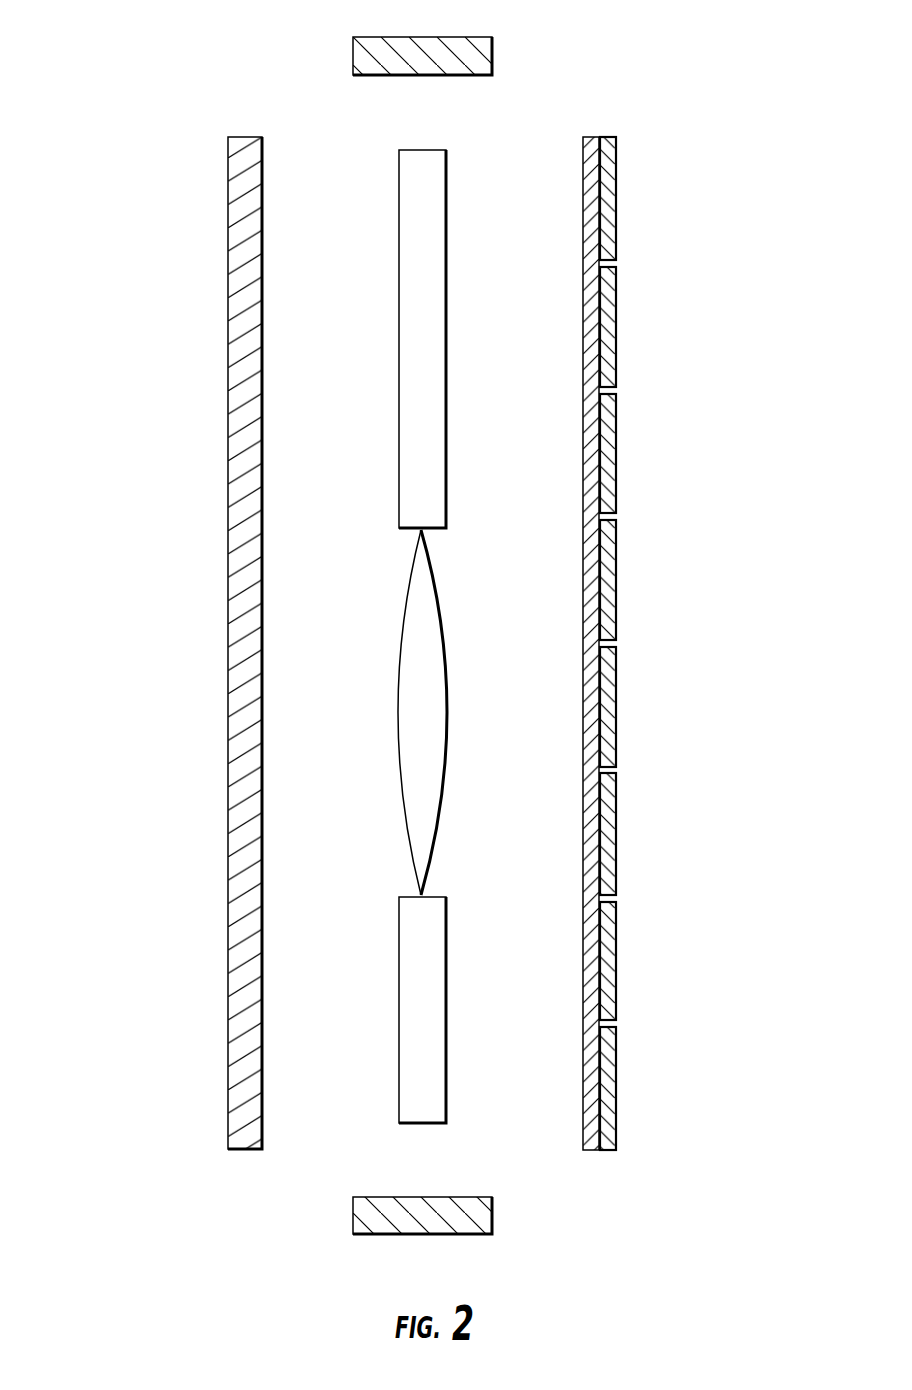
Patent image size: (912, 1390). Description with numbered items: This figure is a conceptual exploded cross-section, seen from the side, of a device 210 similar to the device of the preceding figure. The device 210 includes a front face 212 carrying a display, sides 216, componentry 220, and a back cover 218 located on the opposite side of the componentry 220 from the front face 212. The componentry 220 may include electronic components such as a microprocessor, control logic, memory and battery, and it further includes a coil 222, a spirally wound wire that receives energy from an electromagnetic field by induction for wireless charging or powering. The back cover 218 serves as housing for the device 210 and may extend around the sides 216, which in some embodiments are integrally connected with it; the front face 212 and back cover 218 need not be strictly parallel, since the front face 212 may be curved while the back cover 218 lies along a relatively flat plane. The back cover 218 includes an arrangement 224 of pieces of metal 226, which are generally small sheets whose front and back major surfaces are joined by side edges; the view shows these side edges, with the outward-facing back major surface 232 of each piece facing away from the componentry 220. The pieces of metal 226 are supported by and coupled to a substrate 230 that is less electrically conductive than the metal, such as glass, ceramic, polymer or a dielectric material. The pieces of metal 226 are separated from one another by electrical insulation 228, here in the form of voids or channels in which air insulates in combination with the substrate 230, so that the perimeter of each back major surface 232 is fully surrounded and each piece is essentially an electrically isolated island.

The device 210 is at (84, 83).
The front face 212 is at (243, 520).
The sides 216 is at (372, 58).
The back cover 218 is at (637, 580).
The componentry 220 is at (418, 208).
The coil 222 is at (418, 790).
The arrangement 224 is at (637, 580).
The pieces of metal 226 is at (613, 217).
The electrical insulation 228 is at (624, 768).
The substrate 230 is at (597, 685).
The back major surface 232 is at (622, 833).